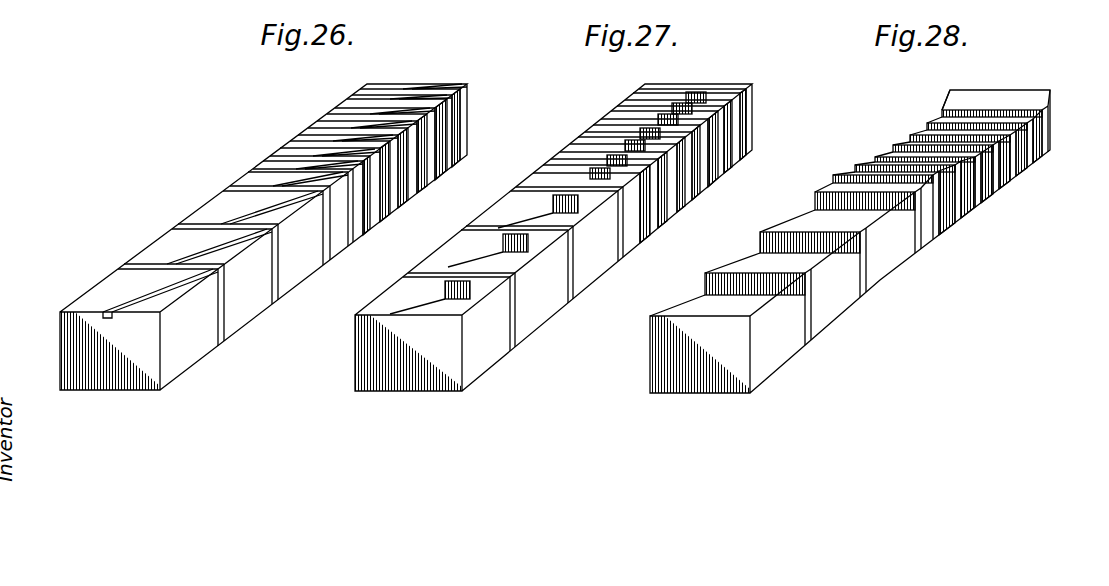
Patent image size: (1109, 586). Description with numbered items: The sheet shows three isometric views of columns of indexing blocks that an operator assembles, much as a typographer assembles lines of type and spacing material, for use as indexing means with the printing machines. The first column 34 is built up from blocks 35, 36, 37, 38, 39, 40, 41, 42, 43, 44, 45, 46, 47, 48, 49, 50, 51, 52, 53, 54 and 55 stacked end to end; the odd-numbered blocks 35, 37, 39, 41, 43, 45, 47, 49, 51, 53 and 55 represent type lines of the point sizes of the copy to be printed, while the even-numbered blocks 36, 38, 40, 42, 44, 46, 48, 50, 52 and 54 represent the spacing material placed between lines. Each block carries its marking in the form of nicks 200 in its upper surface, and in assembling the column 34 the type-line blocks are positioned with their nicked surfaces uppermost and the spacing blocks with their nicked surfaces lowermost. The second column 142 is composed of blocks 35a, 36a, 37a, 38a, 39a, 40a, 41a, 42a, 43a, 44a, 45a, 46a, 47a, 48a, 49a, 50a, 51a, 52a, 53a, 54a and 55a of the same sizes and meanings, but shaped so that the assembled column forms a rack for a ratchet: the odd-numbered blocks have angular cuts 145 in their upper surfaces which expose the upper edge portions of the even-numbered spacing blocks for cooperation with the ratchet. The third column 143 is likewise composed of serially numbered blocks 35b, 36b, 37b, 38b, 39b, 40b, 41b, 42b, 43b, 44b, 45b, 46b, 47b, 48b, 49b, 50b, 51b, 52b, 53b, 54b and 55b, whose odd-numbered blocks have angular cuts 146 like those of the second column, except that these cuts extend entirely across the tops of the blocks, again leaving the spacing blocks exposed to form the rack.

In FIG. 26, the column of blocks 34 is at (97, 365).
In FIG. 26, the nicks 200 is at (130, 293).
In FIG. 26, the block 35 is at (190, 356).
In FIG. 26, the block 36 is at (222, 342).
In FIG. 26, the block 37 is at (250, 307).
In FIG. 26, the block 38 is at (275, 298).
In FIG. 26, the block 39 is at (302, 268).
In FIG. 26, the block 40 is at (330, 250).
In FIG. 26, the block 41 is at (343, 245).
In FIG. 26, the block 42 is at (345, 245).
In FIG. 26, the block 43 is at (352, 232).
In FIG. 26, the block 44 is at (378, 230).
In FIG. 26, the block 45 is at (378, 207).
In FIG. 26, the block 46 is at (400, 207).
In FIG. 26, the block 47 is at (408, 192).
In FIG. 26, the block 48 is at (393, 187).
In FIG. 26, the block 49 is at (418, 162).
In FIG. 26, the block 50 is at (403, 157).
In FIG. 26, the block 51 is at (432, 152).
In FIG. 26, the block 52 is at (427, 157).
In FIG. 26, the block 53 is at (440, 135).
In FIG. 26, the block 54 is at (452, 122).
In FIG. 26, the block 55 is at (465, 107).
In FIG. 27, the column of blocks 142 is at (390, 366).
In FIG. 27, the angular cuts 145 is at (400, 348).
In FIG. 27, the block 35a is at (480, 355).
In FIG. 27, the block 36a is at (510, 330).
In FIG. 27, the block 37a is at (540, 307).
In FIG. 27, the block 38a is at (567, 300).
In FIG. 27, the block 39a is at (595, 260).
In FIG. 27, the block 40a is at (613, 260).
In FIG. 27, the block 41a is at (630, 240).
In FIG. 27, the block 42a is at (643, 245).
In FIG. 27, the block 43a is at (650, 220).
In FIG. 27, the block 44a is at (662, 225).
In FIG. 27, the block 45a is at (670, 200).
In FIG. 27, the block 46a is at (690, 200).
In FIG. 27, the block 47a is at (700, 180).
In FIG. 27, the block 48a is at (693, 178).
In FIG. 27, the block 49a is at (718, 165).
In FIG. 27, the block 50a is at (705, 170).
In FIG. 27, the block 51a is at (720, 150).
In FIG. 27, the block 52a is at (722, 140).
In FIG. 27, the block 53a is at (730, 125).
In FIG. 27, the block 54a is at (740, 110).
In FIG. 27, the block 55a is at (752, 100).
In FIG. 28, the column of blocks 143 is at (672, 372).
In FIG. 28, the angular cuts 146 is at (758, 302).
In FIG. 28, the block 35b is at (768, 367).
In FIG. 28, the block 36b is at (803, 345).
In FIG. 28, the block 37b is at (823, 320).
In FIG. 28, the block 38b is at (822, 322).
In FIG. 28, the block 39b is at (878, 268).
In FIG. 28, the block 40b is at (935, 255).
In FIG. 28, the block 41b is at (927, 247).
In FIG. 28, the block 42b is at (947, 250).
In FIG. 28, the block 43b is at (943, 240).
In FIG. 28, the block 44b is at (952, 233).
In FIG. 28, the block 45b is at (960, 233).
In FIG. 28, the block 46b is at (970, 212).
In FIG. 28, the block 47b is at (977, 213).
In FIG. 28, the block 48b is at (987, 190).
In FIG. 28, the block 49b is at (992, 187).
In FIG. 28, the block 50b is at (992, 175).
In FIG. 28, the block 51b is at (1007, 155).
In FIG. 28, the block 52b is at (1017, 142).
In FIG. 28, the block 53b is at (1023, 130).
In FIG. 28, the block 54b is at (1033, 113).
In FIG. 28, the block 55b is at (1047, 100).